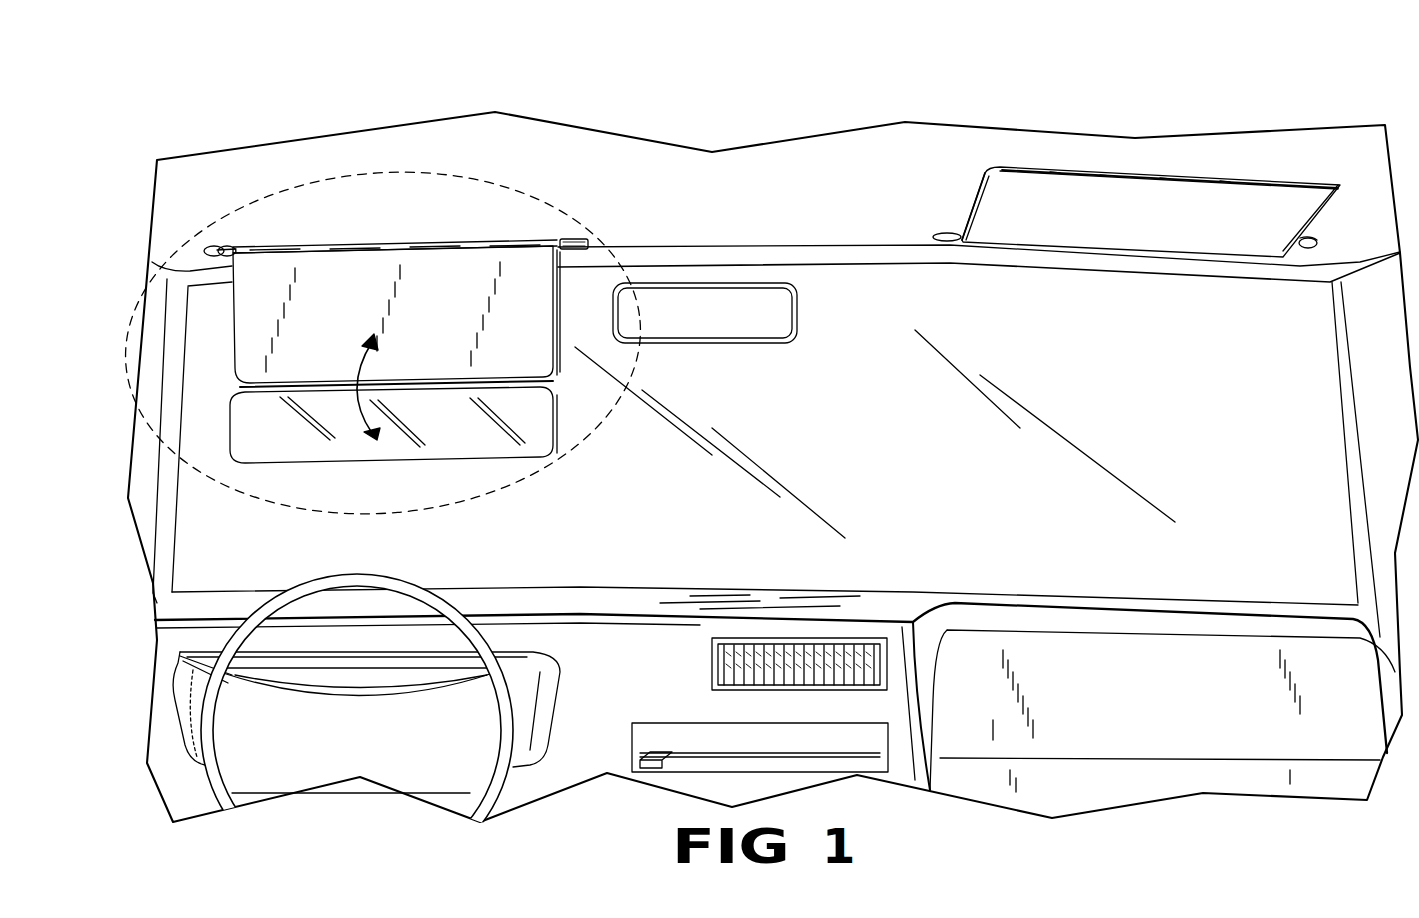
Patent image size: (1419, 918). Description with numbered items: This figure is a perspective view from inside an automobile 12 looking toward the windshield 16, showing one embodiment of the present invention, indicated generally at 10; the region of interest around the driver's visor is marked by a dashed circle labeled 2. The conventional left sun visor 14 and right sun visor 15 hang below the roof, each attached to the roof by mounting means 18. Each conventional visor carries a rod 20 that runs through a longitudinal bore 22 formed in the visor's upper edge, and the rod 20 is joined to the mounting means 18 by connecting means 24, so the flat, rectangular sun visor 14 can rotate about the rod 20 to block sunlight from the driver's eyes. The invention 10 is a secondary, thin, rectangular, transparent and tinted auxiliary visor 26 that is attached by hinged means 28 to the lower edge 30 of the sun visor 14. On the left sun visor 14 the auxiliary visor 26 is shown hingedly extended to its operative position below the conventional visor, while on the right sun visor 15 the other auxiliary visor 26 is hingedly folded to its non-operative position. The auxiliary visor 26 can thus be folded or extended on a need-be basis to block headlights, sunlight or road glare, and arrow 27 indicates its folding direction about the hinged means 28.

The vehicle interior region 2 is at (586, 473).
The present invention 10 is at (636, 426).
The automobile 12 is at (1308, 152).
The left sun visor 14 is at (425, 275).
The right sun visor 15 is at (1173, 228).
The windshield 16 is at (841, 398).
The mounting means 18 is at (211, 246).
The rod 20 is at (589, 245).
The longitudinal bore 22 is at (517, 244).
The connecting means 24 is at (217, 250).
The auxiliary transparent tinted visor 26 is at (310, 452).
The arrow 27 is at (370, 370).
The hinged means 28 is at (293, 383).
The lower edge 30 is at (557, 377).